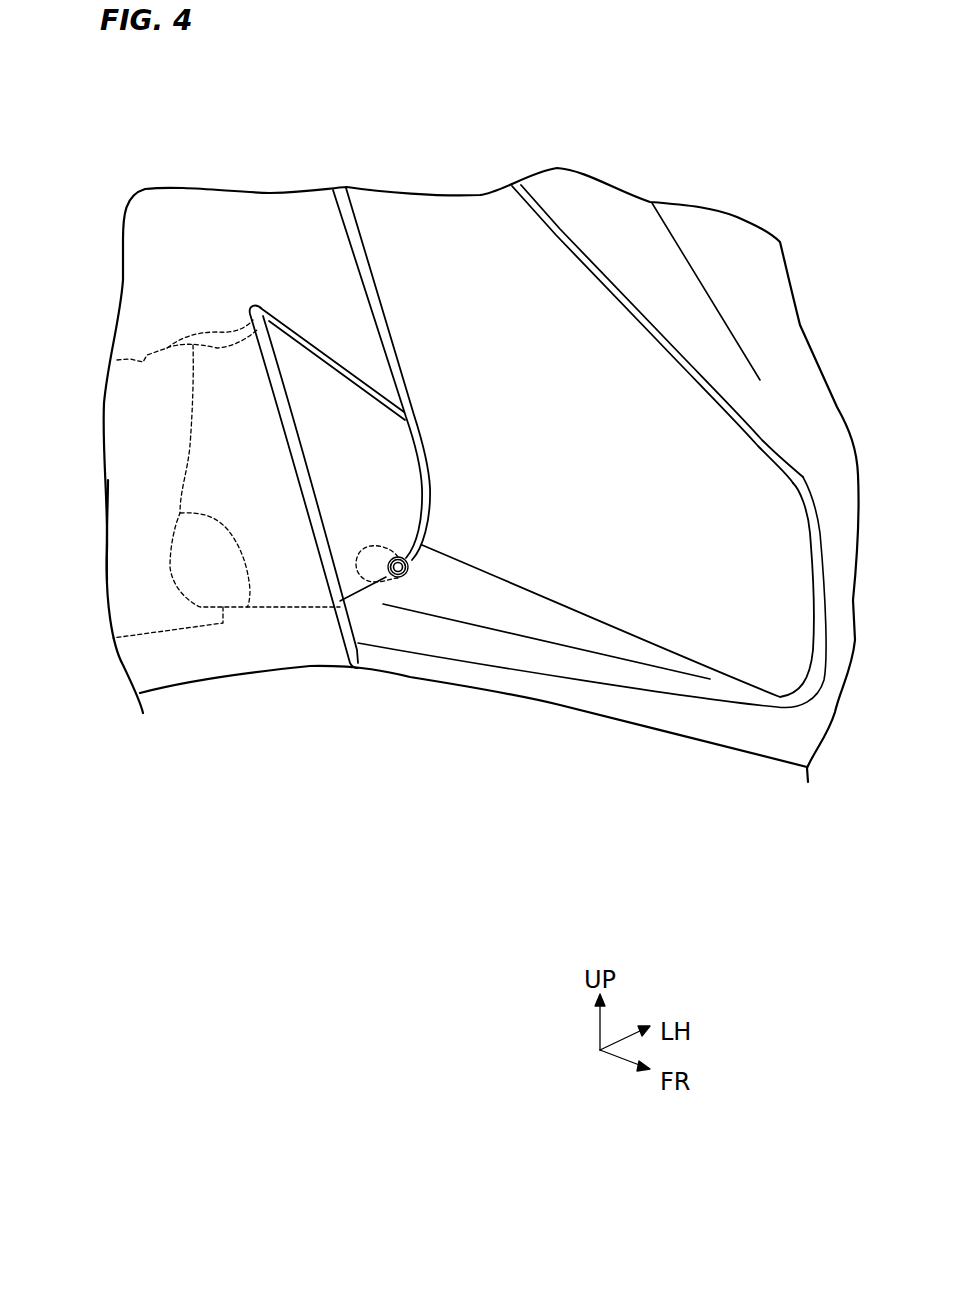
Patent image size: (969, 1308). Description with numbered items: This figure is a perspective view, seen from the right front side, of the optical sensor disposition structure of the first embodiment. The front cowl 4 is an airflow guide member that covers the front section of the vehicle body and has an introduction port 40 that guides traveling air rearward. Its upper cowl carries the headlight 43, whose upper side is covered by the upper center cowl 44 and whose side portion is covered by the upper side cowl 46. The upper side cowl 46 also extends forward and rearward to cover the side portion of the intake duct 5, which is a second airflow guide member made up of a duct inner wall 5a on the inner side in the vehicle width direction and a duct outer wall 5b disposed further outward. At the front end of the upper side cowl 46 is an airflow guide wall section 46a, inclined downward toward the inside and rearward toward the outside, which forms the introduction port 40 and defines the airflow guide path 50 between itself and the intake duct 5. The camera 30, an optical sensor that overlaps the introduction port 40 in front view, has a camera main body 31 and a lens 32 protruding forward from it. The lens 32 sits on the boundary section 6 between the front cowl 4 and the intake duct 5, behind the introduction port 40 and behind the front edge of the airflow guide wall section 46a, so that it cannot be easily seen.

The front cowl 4 is at (780, 348).
The upper center cowl 44 is at (743, 250).
The headlight 43 is at (772, 650).
The introduction port 40 is at (279, 376).
The intake duct 5 is at (328, 777).
The duct inner wall 5a is at (343, 500).
The duct outer wall 5b is at (247, 607).
The airflow guide path 50 is at (234, 465).
The upper side cowl 46 is at (143, 548).
The airflow guide wall section 46a is at (277, 462).
The camera 30 is at (383, 777).
The camera main body 31 is at (372, 582).
The lens 32 is at (410, 572).
The boundary section 6 is at (417, 570).